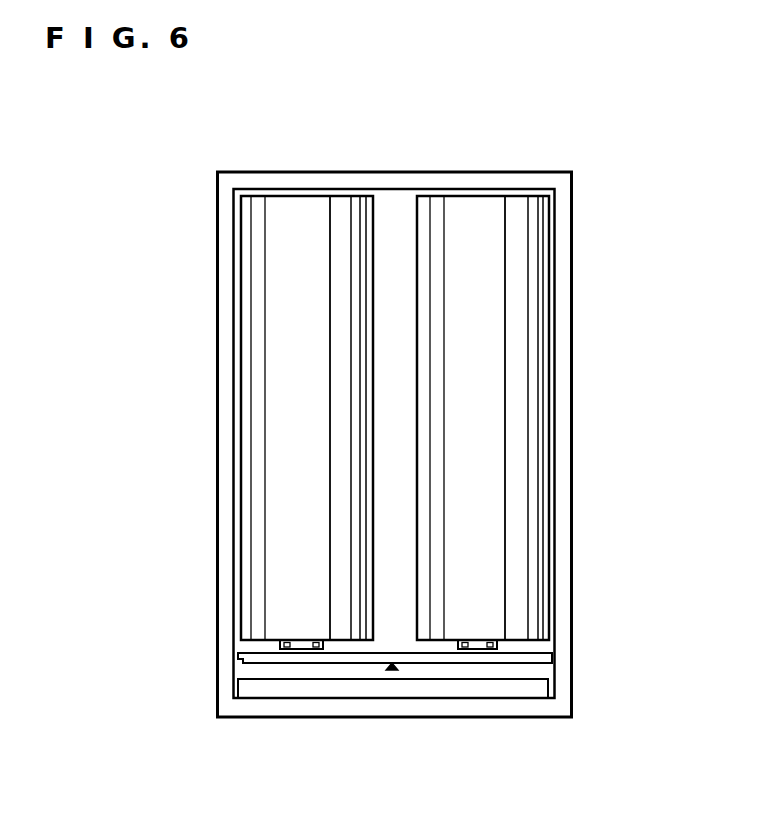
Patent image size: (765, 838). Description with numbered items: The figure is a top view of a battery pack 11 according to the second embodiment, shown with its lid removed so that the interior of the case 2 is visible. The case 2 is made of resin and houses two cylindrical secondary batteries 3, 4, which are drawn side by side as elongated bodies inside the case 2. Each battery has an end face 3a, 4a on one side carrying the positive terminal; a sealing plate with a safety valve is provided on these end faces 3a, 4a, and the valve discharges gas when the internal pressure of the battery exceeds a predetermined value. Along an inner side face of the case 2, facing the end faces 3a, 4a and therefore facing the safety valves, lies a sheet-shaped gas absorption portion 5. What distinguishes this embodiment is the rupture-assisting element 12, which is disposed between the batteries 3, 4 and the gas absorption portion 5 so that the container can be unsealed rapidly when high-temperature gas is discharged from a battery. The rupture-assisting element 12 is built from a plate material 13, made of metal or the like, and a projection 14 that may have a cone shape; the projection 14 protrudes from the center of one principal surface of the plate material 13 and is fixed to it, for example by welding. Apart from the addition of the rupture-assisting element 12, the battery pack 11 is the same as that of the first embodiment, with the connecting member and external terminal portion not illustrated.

The battery pack 11 is at (290, 163).
The case 2 is at (475, 172).
The battery 3 is at (283, 340).
The battery 4 is at (481, 342).
The end face 3a is at (272, 648).
The end face 4a is at (537, 642).
The gas absorption portion 5 is at (268, 687).
The rupture-assisting element 12 is at (493, 782).
The plate material 13 is at (345, 663).
The projection 14 is at (392, 667).